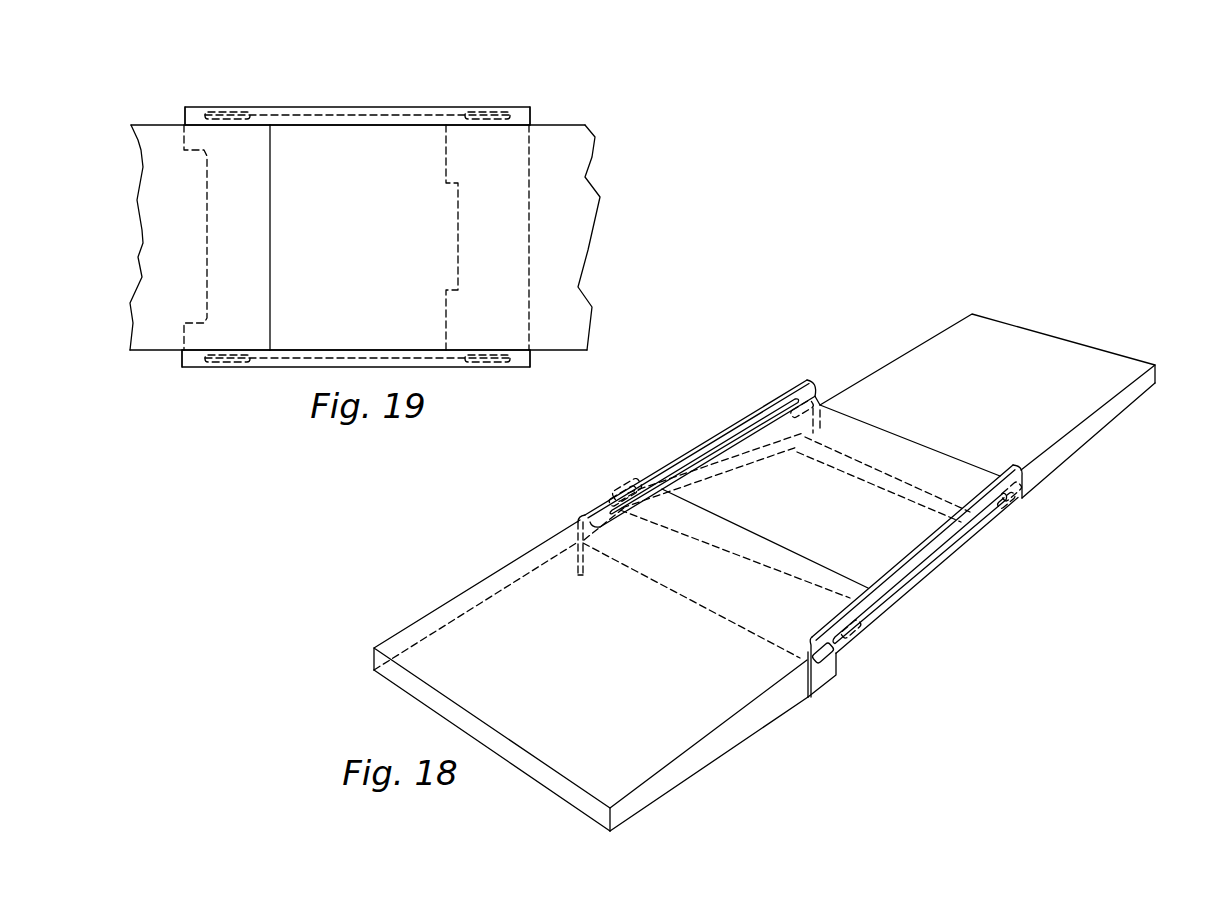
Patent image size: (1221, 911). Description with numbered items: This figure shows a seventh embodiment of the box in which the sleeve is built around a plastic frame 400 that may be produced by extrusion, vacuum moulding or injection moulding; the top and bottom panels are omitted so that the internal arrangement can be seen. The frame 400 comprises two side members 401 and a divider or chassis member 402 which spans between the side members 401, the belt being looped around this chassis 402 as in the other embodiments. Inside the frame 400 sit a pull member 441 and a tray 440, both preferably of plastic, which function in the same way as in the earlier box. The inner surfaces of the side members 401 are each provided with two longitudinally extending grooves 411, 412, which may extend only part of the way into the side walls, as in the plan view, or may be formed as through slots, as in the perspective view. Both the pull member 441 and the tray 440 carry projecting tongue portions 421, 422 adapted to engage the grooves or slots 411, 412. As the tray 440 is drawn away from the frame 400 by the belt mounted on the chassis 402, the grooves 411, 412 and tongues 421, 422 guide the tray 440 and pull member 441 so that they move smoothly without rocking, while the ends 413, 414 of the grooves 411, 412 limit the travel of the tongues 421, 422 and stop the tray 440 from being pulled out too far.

In FIG. 19, the frame 400 is at (367, 98).
In FIG. 18, the frame 400 is at (712, 437).
In FIG. 19, the side member 401 is at (190, 370).
In FIG. 18, the side member 401 is at (682, 463).
In FIG. 18, the divider or chassis member 402 is at (880, 440).
In FIG. 18, the groove 411 is at (757, 427).
In FIG. 18, the groove 412 is at (580, 512).
In FIG. 18, the end of groove 413 is at (627, 500).
In FIG. 18, the end of groove 414 is at (822, 400).
In FIG. 18, the tongue portion 421 is at (623, 492).
In FIG. 18, the tongue portion 422 is at (808, 384).
In FIG. 19, the tray 440 is at (582, 206).
In FIG. 18, the tray 440 is at (1025, 346).
In FIG. 19, the pull member 441 is at (155, 238).
In FIG. 18, the pull member 441 is at (625, 776).